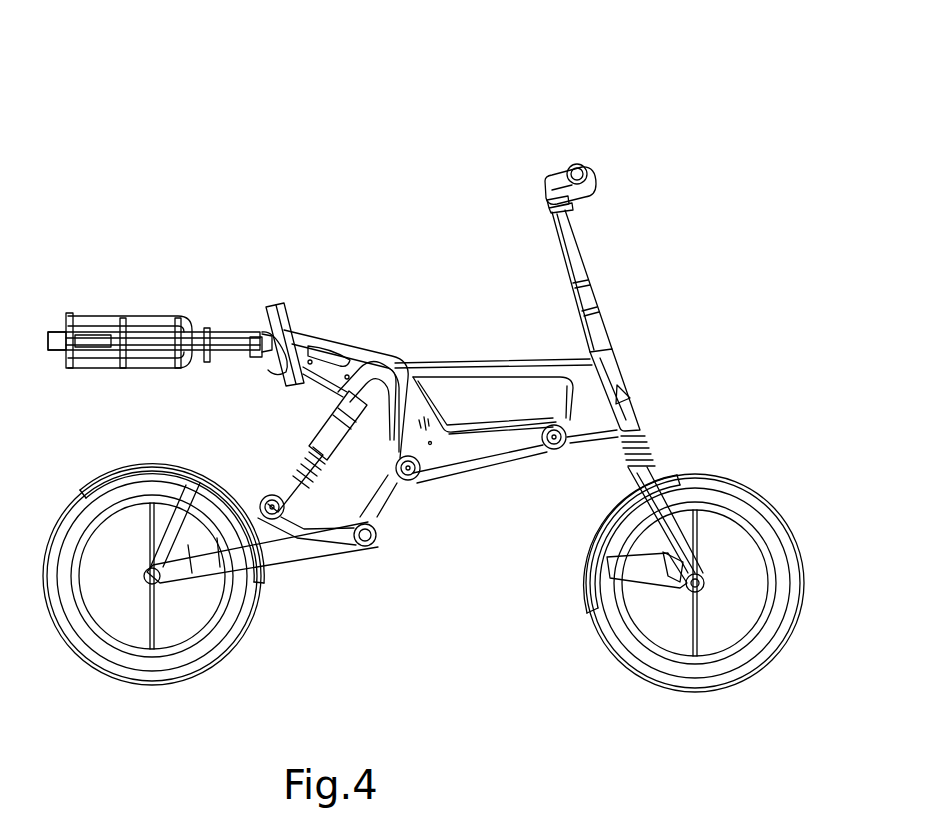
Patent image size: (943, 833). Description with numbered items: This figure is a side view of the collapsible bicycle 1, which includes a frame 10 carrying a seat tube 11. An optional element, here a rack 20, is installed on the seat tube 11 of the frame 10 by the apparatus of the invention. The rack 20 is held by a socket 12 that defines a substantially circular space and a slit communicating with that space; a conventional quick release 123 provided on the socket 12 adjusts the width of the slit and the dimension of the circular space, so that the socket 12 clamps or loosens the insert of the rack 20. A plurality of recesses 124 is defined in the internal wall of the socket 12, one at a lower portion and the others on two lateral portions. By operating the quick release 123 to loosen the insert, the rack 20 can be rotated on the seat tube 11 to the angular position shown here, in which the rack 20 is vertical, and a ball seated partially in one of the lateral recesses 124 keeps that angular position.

The collapsible bicycle 1 is at (602, 143).
The frame 10 is at (473, 364).
The seat tube 11 is at (286, 322).
The socket 12 is at (264, 340).
The quick release 123 is at (258, 362).
The recesses 124 is at (268, 347).
The rack 20 is at (156, 325).